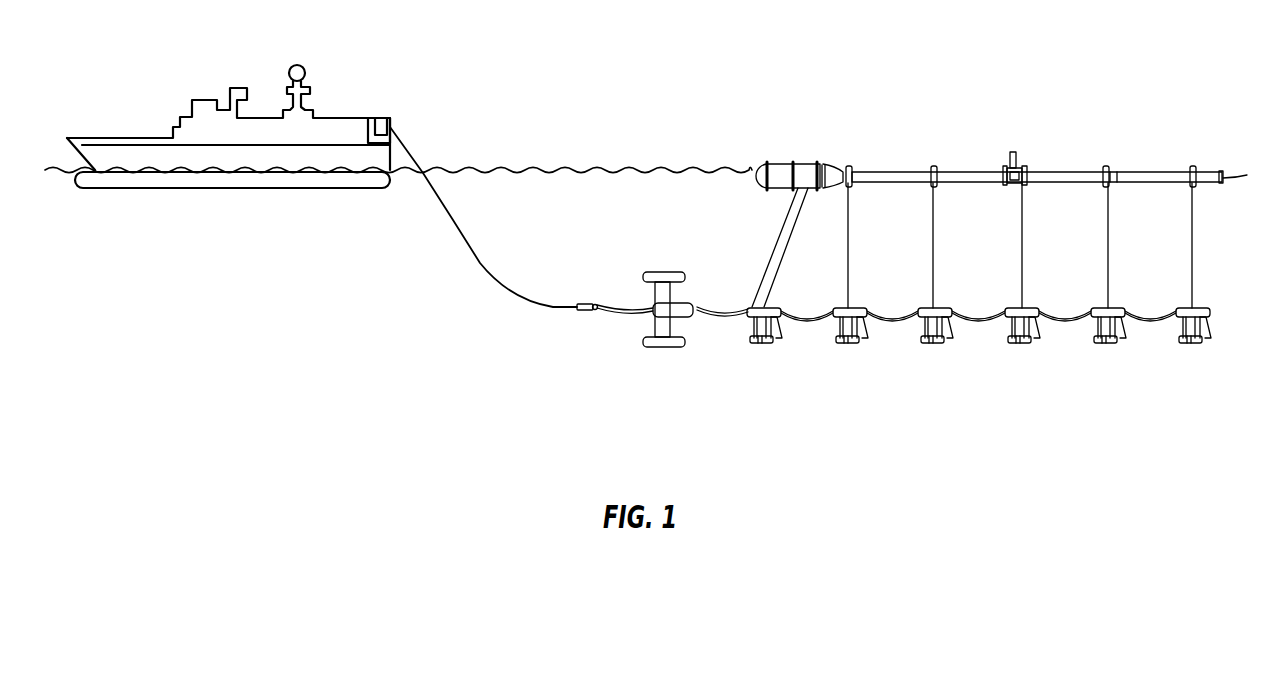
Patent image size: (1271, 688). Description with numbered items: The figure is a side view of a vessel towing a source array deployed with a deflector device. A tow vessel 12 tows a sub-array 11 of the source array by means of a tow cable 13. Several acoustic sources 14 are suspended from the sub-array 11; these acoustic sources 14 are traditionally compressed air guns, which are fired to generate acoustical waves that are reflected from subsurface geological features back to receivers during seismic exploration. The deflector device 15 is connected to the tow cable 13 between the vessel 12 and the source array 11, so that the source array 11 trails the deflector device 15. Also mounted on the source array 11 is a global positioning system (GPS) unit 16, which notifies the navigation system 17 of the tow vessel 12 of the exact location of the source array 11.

The sub-array 11 is at (1137, 172).
The tow vessel 12 is at (107, 137).
The tow cable 13 is at (453, 220).
The acoustic sources 14 is at (843, 343).
The deflector device 15 is at (653, 343).
The global positioning system (GPS) unit 16 is at (1012, 152).
The navigation system 17 is at (297, 65).